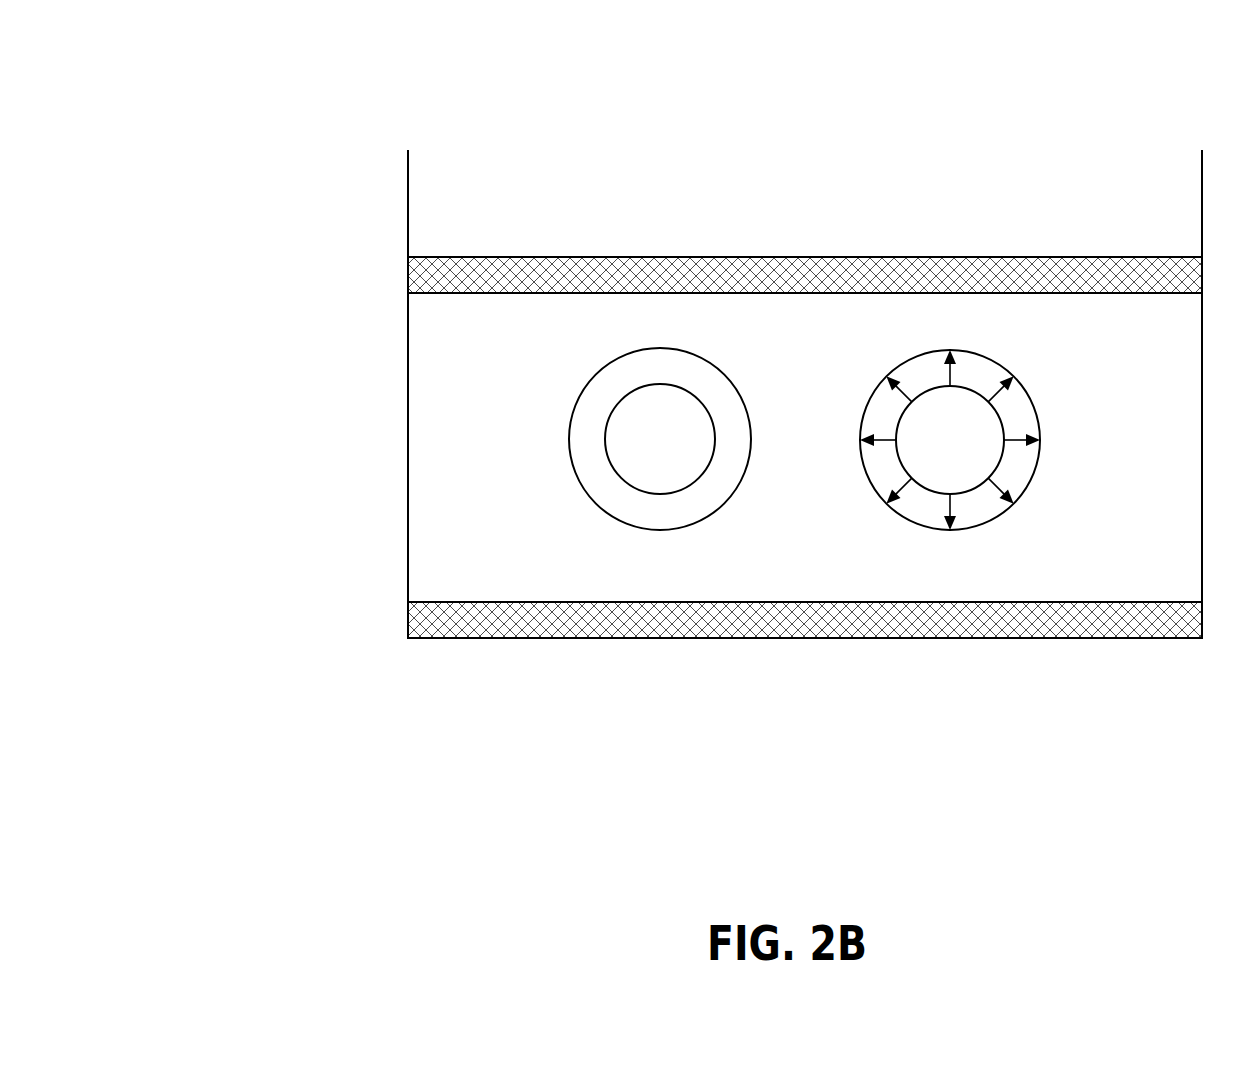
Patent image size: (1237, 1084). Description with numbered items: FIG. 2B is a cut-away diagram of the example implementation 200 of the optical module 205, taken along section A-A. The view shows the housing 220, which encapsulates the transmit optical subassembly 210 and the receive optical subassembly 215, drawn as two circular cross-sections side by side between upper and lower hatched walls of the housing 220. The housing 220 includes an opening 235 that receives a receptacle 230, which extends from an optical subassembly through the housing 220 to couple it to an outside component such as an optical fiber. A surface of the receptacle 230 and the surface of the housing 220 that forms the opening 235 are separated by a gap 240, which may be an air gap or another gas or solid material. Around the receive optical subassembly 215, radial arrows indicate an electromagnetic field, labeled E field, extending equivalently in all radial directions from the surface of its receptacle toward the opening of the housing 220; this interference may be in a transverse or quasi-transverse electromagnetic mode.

The example implementation 200 is at (298, 67).
The optical module 205 is at (390, 257).
The transmit optical subassembly 210 is at (680, 449).
The receive optical subassembly 215 is at (970, 450).
The housing 220 is at (1168, 341).
The receptacle 230 is at (606, 412).
The opening 235 is at (598, 363).
The gap 240 is at (662, 363).